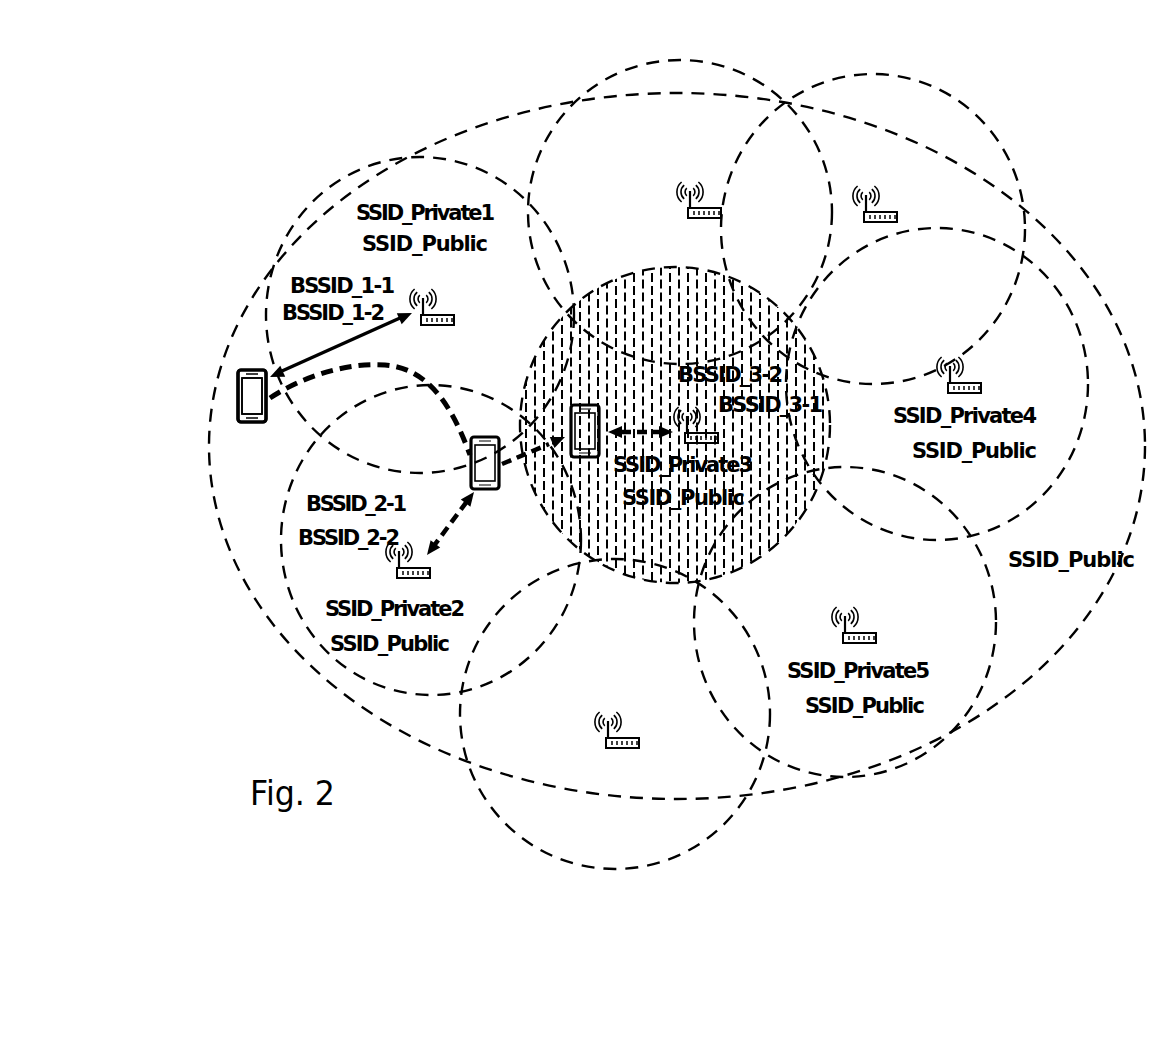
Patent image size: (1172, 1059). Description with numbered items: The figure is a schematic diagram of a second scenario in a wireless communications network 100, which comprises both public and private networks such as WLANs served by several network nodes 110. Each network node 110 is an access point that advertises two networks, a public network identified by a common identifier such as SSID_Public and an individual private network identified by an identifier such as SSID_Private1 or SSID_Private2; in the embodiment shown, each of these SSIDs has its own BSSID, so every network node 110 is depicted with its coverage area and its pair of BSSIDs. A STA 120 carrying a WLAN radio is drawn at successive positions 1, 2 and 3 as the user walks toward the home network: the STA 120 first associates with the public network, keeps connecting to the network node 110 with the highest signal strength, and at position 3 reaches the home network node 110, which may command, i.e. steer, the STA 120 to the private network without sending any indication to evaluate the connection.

The communications network 100 is at (280, 684).
The network node 110 is at (675, 207).
The STA 120 is at (240, 368).
The terminal position 1 is at (240, 404).
The terminal position 2 is at (463, 463).
The terminal position 3 is at (568, 424).